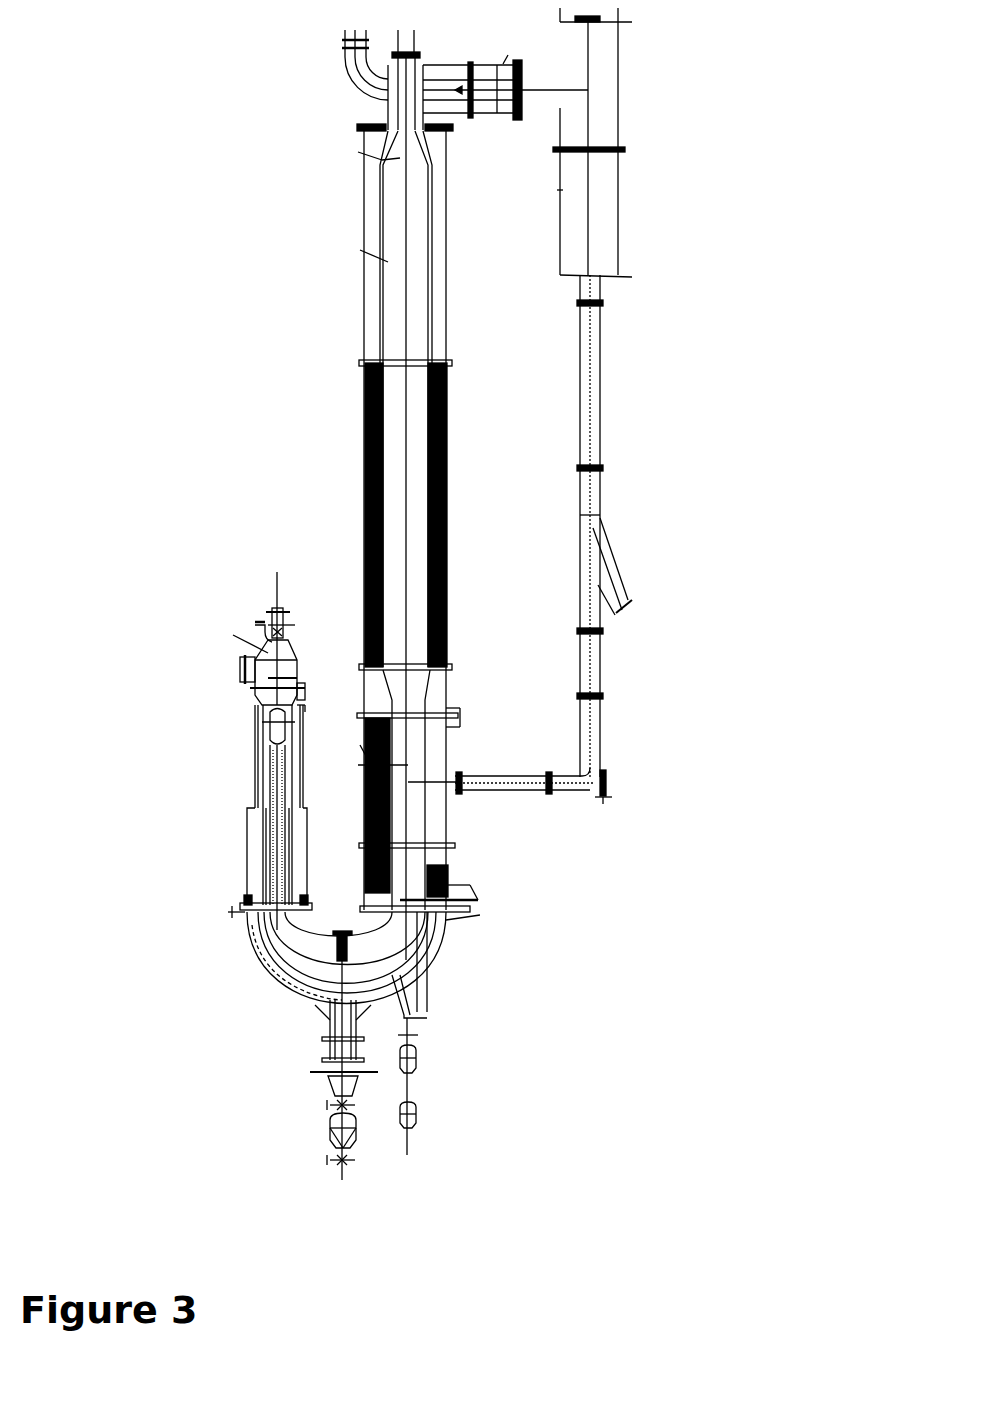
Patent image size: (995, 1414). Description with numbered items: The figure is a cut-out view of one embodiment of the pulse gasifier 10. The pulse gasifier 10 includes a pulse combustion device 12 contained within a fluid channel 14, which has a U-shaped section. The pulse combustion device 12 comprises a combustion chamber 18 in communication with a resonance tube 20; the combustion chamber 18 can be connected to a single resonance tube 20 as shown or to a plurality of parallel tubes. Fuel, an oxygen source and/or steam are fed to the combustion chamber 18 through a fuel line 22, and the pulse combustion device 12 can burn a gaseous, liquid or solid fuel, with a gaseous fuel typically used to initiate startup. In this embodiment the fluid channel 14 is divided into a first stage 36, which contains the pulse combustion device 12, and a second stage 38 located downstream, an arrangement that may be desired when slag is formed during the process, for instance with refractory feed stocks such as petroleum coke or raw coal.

The pulse gasifier 10 is at (727, 713).
The pulse combustion device 12 is at (248, 722).
The fluid channel 14 is at (250, 838).
The combustion chamber 18 is at (304, 749).
The resonance tube 20 is at (278, 850).
The fuel line 22 is at (275, 586).
The first stage 36 is at (253, 764).
The second stage 38 is at (448, 547).